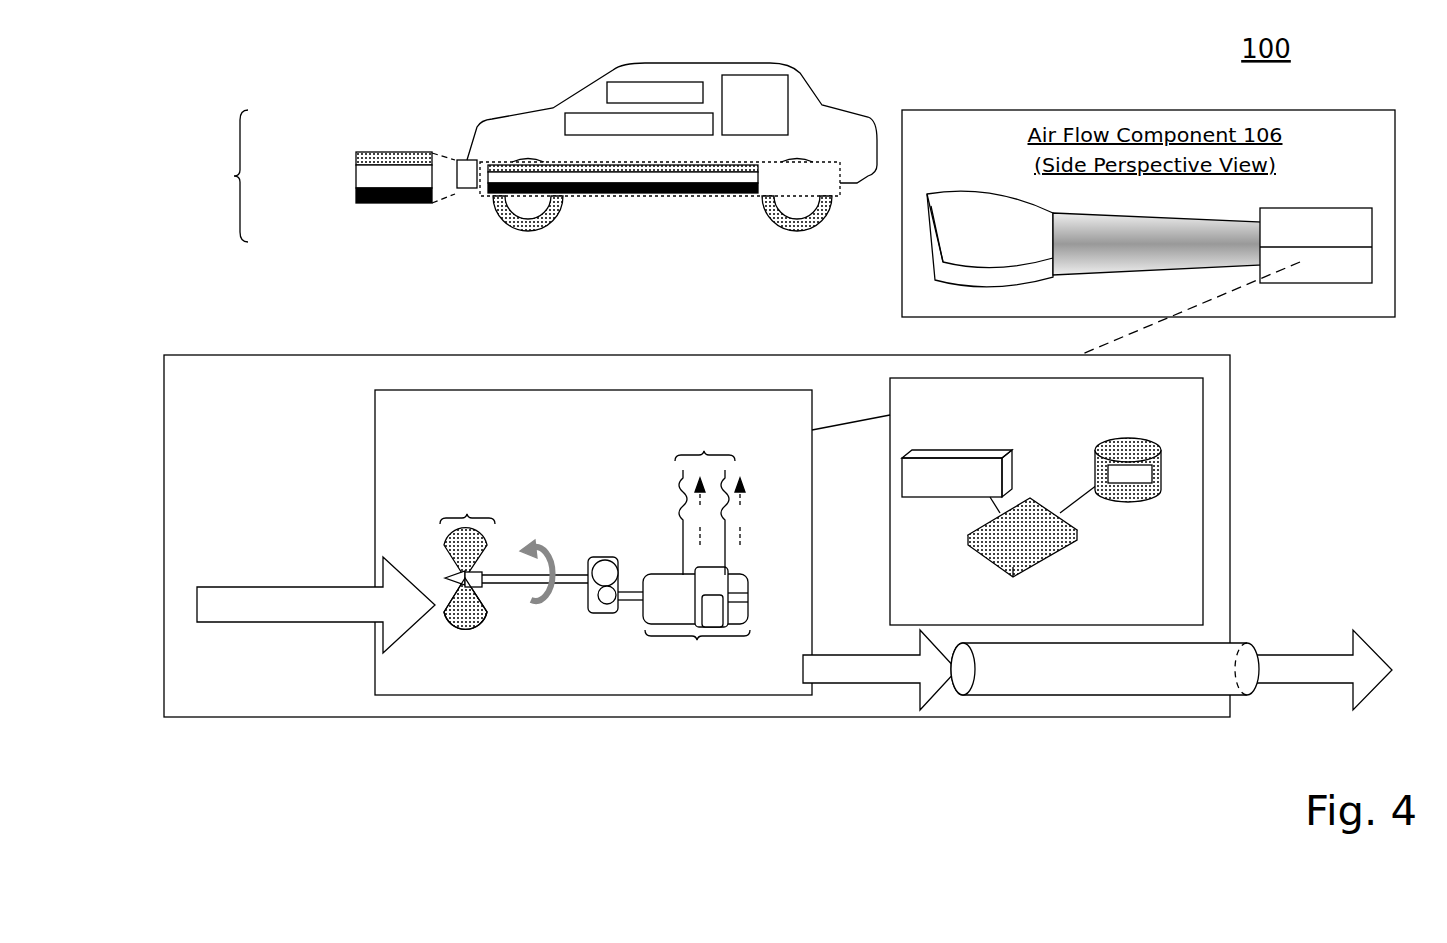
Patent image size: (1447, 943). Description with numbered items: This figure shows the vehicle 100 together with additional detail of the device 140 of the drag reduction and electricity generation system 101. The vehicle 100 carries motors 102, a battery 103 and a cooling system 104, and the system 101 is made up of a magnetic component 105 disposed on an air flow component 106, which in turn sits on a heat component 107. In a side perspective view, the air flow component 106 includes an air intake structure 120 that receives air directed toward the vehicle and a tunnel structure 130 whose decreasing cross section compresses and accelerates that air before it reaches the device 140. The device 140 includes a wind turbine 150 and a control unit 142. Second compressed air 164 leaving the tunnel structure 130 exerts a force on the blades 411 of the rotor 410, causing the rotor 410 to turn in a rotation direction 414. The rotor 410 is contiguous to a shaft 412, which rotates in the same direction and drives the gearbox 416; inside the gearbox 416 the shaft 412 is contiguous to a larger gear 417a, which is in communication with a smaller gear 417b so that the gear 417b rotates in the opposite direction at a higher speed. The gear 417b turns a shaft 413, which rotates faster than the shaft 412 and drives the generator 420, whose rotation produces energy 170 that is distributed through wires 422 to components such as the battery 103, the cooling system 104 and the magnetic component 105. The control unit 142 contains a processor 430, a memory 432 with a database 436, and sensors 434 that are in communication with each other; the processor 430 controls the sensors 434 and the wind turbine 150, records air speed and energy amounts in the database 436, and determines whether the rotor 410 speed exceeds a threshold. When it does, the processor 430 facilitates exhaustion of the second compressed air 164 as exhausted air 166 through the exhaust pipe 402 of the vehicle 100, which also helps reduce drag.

The vehicle 100 is at (502, 117).
The system 101 is at (194, 176).
The motors 102 is at (755, 105).
The battery 103 is at (655, 92).
The cooling system 104 is at (639, 124).
The magnetic component 105 is at (375, 152).
The air flow component 106 is at (367, 175).
The heat component 107 is at (372, 203).
The air intake structure 120 is at (990, 239).
The tunnel structure 130 is at (1158, 244).
The device 140 is at (768, 462).
The control unit 142 is at (1046, 501).
The wind turbine 150 is at (593, 542).
The second compressed air 164 is at (316, 605).
The exhausted air 166 is at (1097, 670).
The energy 170 is at (767, 508).
The exhaust pipe 402 is at (1105, 669).
The rotor 410 is at (461, 562).
The blades 411 is at (468, 613).
The shaft 412 is at (503, 573).
The shaft 413 is at (630, 588).
The rotation direction 414 is at (537, 603).
The gearbox 416 is at (603, 613).
The gear 417a is at (602, 574).
The gear 417b is at (608, 598).
The generator 420 is at (696, 613).
The wires 422 is at (702, 499).
The processor 430 is at (1008, 573).
The memory 432 is at (1130, 505).
The sensors 434 is at (957, 473).
The database 436 is at (1113, 468).